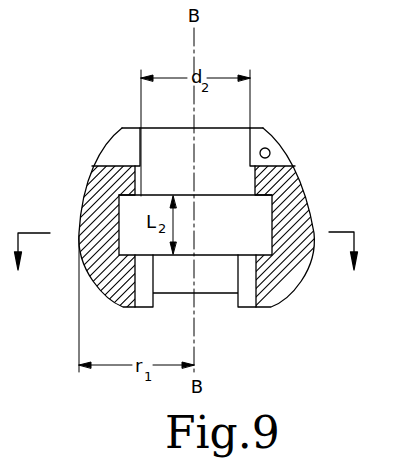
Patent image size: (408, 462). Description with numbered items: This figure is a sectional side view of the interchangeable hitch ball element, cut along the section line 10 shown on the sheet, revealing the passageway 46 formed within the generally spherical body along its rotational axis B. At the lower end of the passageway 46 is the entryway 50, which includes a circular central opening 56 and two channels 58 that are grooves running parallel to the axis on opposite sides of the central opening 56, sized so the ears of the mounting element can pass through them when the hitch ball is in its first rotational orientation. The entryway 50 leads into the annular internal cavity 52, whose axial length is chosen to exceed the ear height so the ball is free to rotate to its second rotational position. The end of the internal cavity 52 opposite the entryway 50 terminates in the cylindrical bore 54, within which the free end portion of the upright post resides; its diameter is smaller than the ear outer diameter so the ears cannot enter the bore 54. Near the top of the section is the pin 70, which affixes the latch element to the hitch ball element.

The section line 10- 10 is at (191, 269).
The passageway 46 is at (221, 318).
The entryway 50 is at (186, 277).
The internal cavity 52 is at (216, 207).
The cylindrical bore 54 is at (172, 135).
The central opening 56 is at (226, 276).
The channels 58 is at (247, 272).
The pin 70 is at (270, 153).